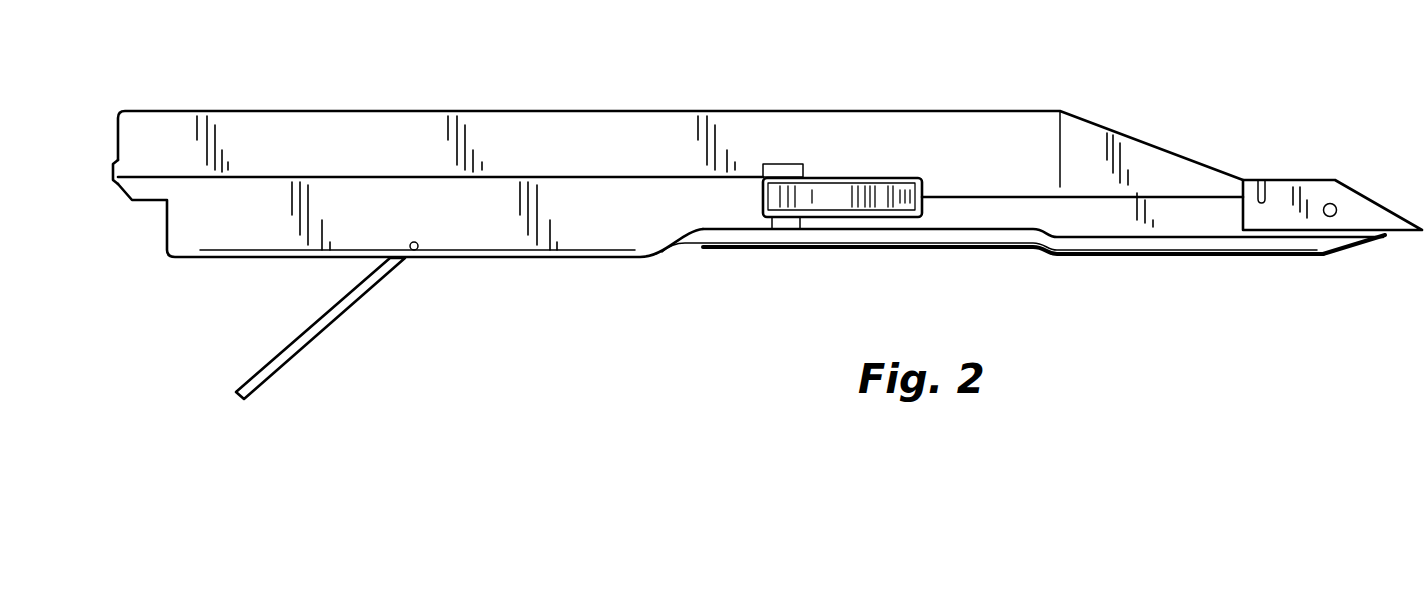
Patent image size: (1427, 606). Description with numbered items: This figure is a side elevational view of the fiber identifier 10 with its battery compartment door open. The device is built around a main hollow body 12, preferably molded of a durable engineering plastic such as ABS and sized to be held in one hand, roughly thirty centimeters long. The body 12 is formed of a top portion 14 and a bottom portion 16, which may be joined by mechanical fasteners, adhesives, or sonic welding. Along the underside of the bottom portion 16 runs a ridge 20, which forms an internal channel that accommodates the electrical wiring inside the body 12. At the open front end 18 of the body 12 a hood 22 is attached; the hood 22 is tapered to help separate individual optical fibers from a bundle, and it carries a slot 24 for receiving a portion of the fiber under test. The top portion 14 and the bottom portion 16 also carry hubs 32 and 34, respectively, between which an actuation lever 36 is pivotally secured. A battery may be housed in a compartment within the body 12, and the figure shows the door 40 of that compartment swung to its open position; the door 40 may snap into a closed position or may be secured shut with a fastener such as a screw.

The fiber identifier 10 is at (923, 92).
The main hollow body 12 is at (558, 106).
The top portion 14 is at (272, 110).
The bottom portion 16 is at (585, 260).
The open front end 18 is at (1264, 148).
The ridge 20 is at (1053, 257).
The hood 22 is at (1378, 217).
The slot 24 is at (1263, 178).
The hub 32 is at (787, 170).
The hub 34 is at (787, 225).
The actuation lever 36 is at (925, 182).
The door 40 is at (330, 324).